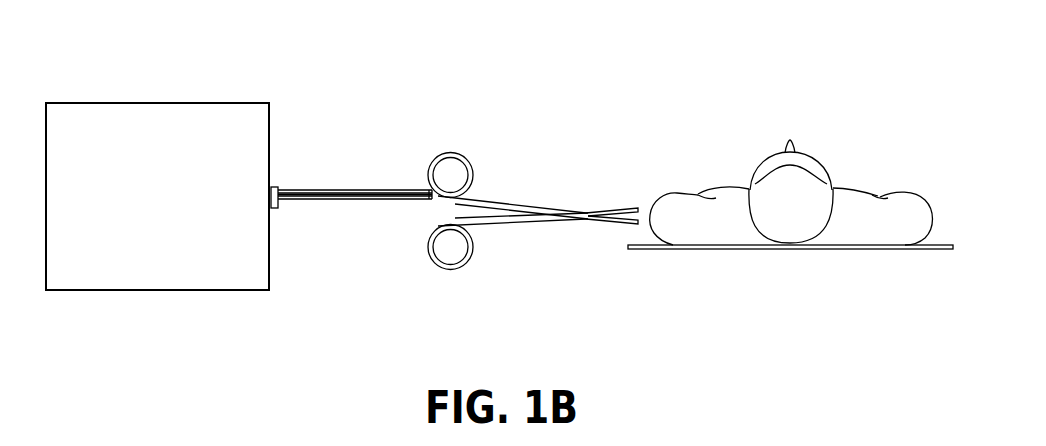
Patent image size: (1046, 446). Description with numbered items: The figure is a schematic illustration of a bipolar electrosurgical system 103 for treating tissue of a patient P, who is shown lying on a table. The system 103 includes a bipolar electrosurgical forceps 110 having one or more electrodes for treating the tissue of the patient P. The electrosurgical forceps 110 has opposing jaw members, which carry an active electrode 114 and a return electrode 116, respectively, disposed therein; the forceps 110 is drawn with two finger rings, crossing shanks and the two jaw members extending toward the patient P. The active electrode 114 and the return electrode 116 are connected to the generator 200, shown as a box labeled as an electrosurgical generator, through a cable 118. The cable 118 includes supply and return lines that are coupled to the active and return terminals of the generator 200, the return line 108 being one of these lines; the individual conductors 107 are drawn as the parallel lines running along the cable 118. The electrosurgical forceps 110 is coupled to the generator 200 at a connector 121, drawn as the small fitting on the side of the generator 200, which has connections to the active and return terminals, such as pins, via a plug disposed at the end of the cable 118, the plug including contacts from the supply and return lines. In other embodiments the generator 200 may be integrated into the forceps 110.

The bipolar electrosurgical system 103 is at (278, 59).
The generator 200 is at (148, 103).
The connector 121 is at (275, 187).
The return line 108 is at (337, 190).
The wires 107 is at (305, 200).
The bipolar electrosurgical forceps 110 is at (508, 202).
The cable 118 is at (392, 190).
The active electrode 114 is at (617, 208).
The return electrode 116 is at (615, 224).
The patient P is at (864, 174).